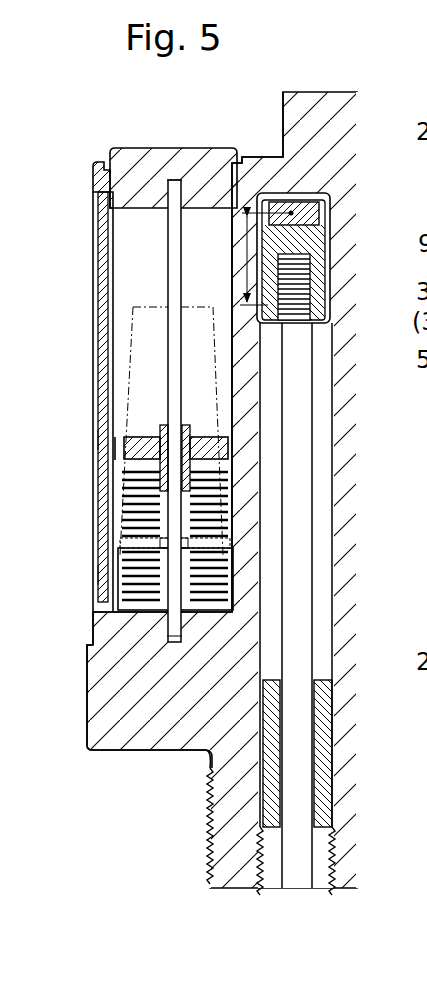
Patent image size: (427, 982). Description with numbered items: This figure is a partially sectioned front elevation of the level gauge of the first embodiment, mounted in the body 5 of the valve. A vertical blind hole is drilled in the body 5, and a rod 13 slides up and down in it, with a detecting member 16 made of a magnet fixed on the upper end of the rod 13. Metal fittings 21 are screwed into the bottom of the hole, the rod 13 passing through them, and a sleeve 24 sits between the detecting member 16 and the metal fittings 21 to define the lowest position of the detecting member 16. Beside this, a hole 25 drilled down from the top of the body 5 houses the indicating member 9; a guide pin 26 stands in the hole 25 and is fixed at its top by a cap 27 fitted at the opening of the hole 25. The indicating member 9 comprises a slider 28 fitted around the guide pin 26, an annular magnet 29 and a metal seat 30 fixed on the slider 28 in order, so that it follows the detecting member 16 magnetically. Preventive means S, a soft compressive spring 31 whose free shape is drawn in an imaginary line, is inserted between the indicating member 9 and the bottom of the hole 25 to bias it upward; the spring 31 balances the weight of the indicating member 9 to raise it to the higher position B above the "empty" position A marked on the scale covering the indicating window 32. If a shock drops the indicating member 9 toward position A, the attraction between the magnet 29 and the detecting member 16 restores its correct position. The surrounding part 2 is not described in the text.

The pipe body 2 is at (285, 265).
The body 5 is at (108, 720).
The indicating member 9 is at (124, 452).
The rod 13 is at (302, 590).
The detecting member 16 is at (310, 242).
The metal fittings 21 is at (325, 862).
The sleeve 24 is at (325, 720).
The hole 25 is at (133, 230).
The guide pin 26 is at (177, 246).
The cap 27 is at (176, 155).
The slider 28 is at (228, 470).
The annular magnet 29 is at (232, 444).
The metal seat 30 is at (150, 432).
The soft compressive spring 31 is at (135, 600).
The indicating window 32 is at (96, 333).
The "empty" position A is at (104, 575).
The higher position B is at (104, 440).
The preventive means S is at (130, 500).